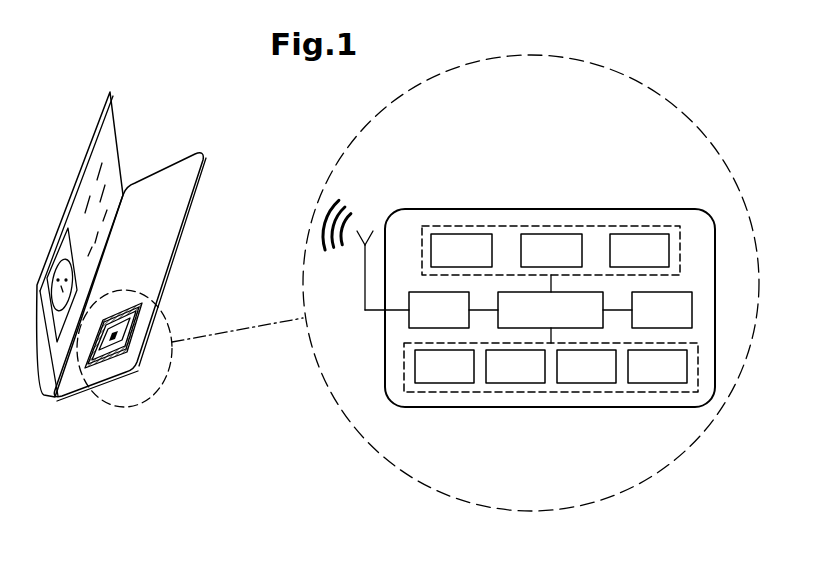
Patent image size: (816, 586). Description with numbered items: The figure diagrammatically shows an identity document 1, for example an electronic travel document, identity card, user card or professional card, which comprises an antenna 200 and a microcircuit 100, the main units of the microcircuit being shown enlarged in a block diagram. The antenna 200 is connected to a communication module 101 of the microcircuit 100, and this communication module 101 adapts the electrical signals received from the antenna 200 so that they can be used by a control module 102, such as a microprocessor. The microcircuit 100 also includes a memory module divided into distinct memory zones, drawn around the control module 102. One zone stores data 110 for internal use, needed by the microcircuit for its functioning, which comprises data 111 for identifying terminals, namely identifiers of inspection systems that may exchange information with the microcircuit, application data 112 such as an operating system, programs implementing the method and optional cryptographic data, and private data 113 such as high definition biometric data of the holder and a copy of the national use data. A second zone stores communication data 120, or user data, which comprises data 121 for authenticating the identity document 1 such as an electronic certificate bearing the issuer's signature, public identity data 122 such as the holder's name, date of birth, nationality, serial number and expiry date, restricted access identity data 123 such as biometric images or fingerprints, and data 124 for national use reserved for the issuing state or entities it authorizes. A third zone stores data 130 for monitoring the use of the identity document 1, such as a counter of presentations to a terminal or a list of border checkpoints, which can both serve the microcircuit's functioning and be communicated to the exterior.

The identity document 1 is at (145, 150).
The microcircuit 100 is at (113, 333).
The antenna 200 is at (117, 370).
The data for internal use 110 is at (597, 226).
The data for identifying terminals 111 is at (443, 262).
The application data 112 is at (533, 262).
The private data 113 is at (621, 262).
The communication module 101 is at (420, 320).
The control module 102 is at (532, 320).
The data for monitoring the use of the identity document 130 is at (644, 320).
The communication data 120 is at (551, 392).
The data for authenticating the identity document 121 is at (426, 378).
The public identity data 122 is at (497, 378).
The restricted access identity data 123 is at (568, 378).
The data for national use 124 is at (639, 378).